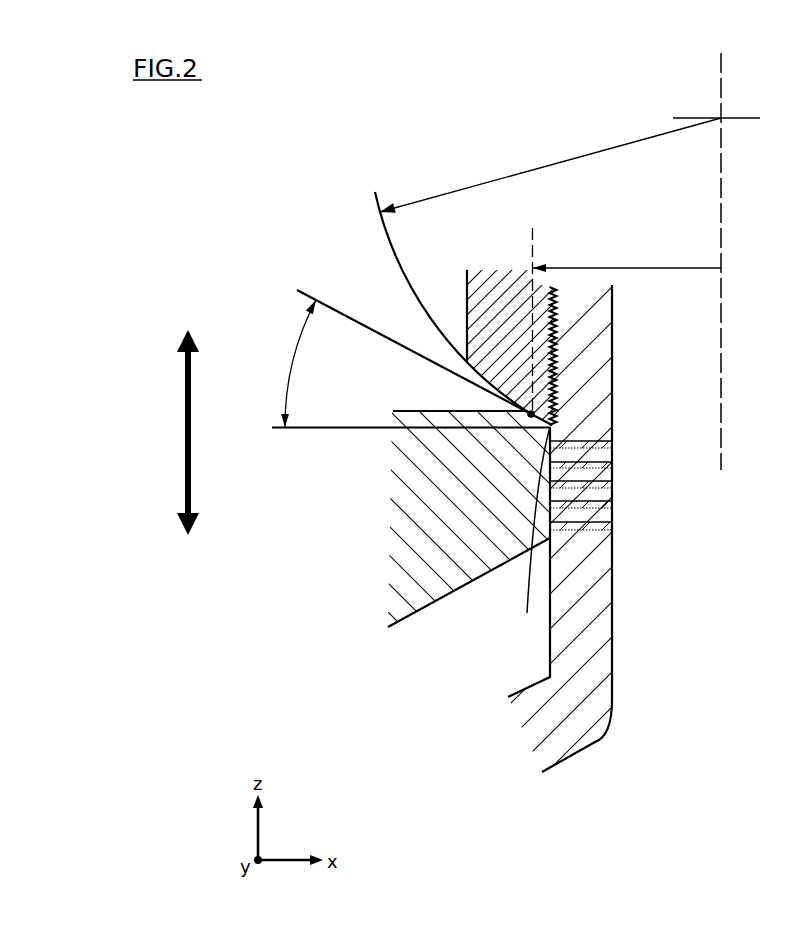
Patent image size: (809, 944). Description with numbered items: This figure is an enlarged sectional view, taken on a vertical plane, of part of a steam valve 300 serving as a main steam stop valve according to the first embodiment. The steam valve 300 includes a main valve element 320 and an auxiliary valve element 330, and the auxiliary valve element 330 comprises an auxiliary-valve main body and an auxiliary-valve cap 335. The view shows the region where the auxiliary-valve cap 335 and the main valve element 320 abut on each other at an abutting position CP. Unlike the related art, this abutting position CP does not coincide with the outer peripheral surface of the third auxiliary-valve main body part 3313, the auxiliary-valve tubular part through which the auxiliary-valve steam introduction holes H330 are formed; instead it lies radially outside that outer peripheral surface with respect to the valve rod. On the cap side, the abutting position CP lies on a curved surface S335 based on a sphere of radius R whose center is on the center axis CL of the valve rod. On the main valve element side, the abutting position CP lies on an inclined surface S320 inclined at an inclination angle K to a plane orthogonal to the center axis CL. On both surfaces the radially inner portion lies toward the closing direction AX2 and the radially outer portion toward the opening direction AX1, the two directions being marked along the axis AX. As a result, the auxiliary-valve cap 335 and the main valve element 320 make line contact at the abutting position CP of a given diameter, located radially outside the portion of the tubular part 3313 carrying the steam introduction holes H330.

The steam valve 300 is at (497, 64).
The main valve element 320 is at (417, 513).
The auxiliary valve element 330 is at (576, 250).
The auxiliary-valve cap 335 is at (495, 277).
The third auxiliary-valve main body part 3313 is at (603, 317).
The curved surface S335 is at (487, 390).
The inclined surface S320 is at (515, 536).
The auxiliary-valve steam introduction holes H330 is at (608, 527).
The abutting position CP is at (534, 413).
The center axis CL is at (722, 432).
The radius R is at (550, 165).
The inclination angle K is at (407, 358).
The optical axis AX is at (186, 433).
The opening direction AX1 is at (183, 316).
The closing direction AX2 is at (184, 558).